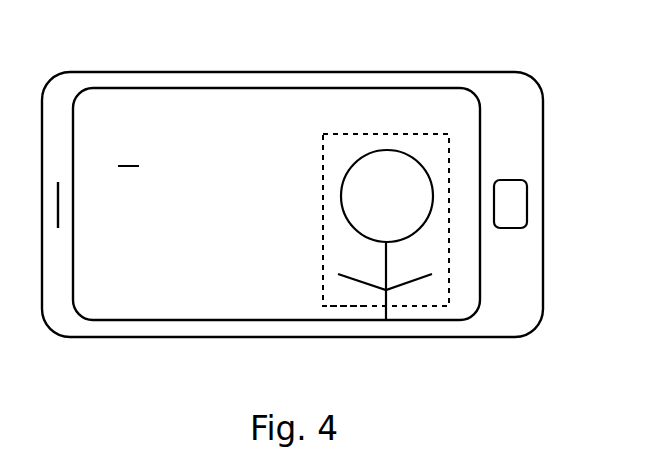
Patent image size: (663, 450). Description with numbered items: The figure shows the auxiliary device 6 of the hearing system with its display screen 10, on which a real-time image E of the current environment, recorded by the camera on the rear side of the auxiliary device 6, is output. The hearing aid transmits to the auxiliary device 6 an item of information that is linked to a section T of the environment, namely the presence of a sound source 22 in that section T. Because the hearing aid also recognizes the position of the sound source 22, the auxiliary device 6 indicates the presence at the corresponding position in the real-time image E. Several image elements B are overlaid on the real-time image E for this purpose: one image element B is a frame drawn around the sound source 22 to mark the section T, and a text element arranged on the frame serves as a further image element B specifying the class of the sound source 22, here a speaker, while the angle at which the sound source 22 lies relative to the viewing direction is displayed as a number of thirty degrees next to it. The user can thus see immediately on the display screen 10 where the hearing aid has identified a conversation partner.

The auxiliary device 6 is at (91, 72).
The display screen 10 is at (167, 88).
The real-time image E is at (129, 149).
The image element B is at (367, 108).
The sound source 22 is at (385, 263).
The section T is at (350, 306).